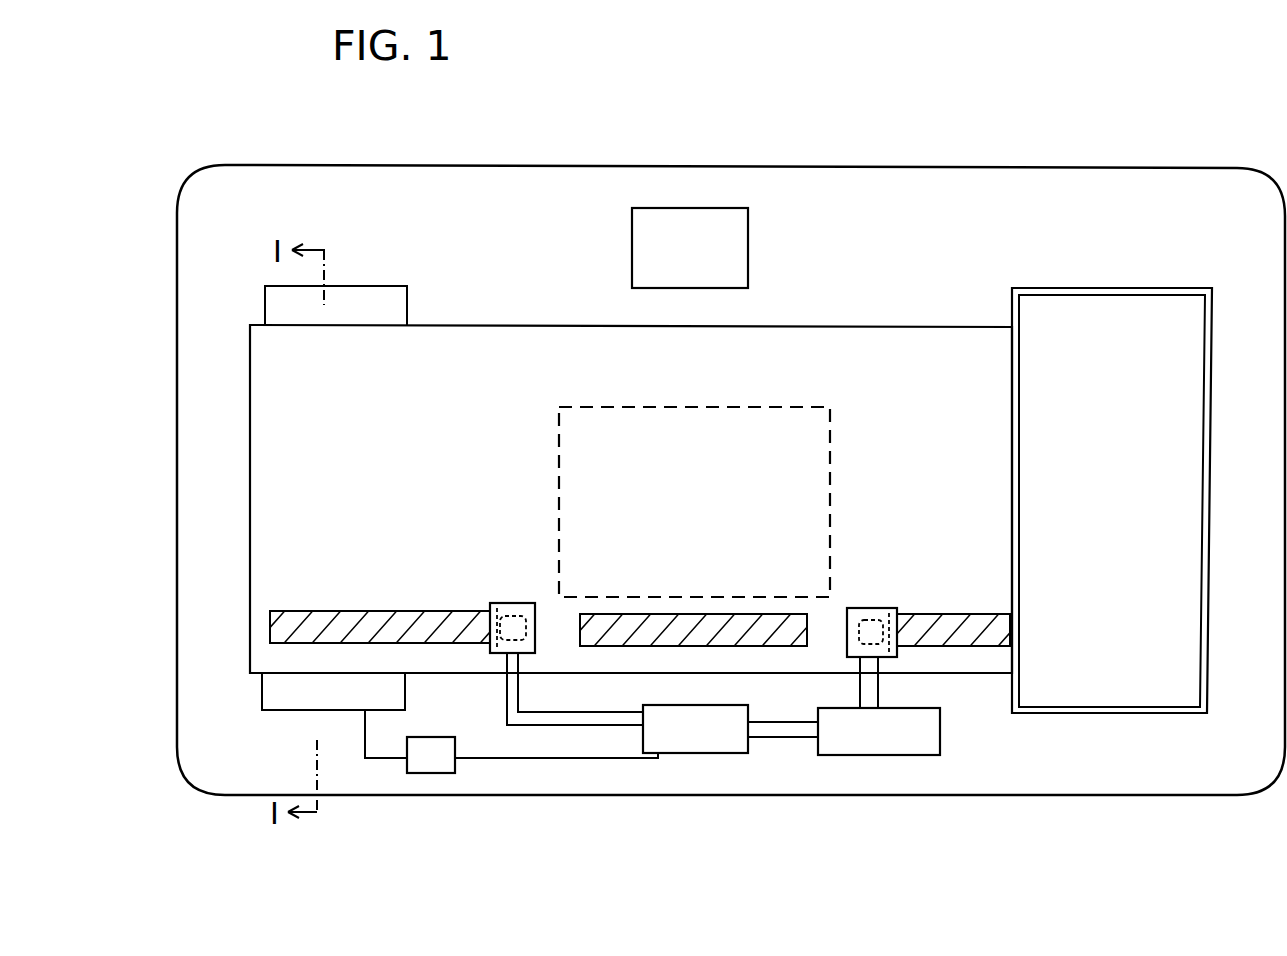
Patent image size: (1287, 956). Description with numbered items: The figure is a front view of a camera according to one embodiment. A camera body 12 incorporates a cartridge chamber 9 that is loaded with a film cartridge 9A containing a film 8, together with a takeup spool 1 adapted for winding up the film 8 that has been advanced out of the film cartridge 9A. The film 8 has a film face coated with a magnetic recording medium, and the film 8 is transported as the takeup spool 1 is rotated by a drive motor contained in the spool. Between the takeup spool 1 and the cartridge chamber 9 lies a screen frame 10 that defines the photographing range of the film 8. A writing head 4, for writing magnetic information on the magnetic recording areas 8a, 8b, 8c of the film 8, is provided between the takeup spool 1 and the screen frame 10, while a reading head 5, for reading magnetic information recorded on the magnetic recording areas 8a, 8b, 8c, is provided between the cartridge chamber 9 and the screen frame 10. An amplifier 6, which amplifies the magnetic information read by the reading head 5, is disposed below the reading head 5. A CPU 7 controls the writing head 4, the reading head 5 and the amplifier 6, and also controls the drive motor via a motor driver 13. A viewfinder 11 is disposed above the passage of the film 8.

The takeup spool 1 is at (315, 705).
The writing head 4 is at (498, 654).
The reading head 5 is at (858, 608).
The amplifier 6 is at (932, 740).
The CPU 7 is at (710, 745).
The film 8 is at (975, 350).
The magnetic recording area 8a is at (347, 610).
The magnetic recording area 8b is at (707, 612).
The magnetic recording area 8c is at (937, 615).
The cartridge chamber 9 is at (1112, 577).
The film cartridge 9A is at (1187, 682).
The screen frame 10 is at (830, 491).
The viewfinder 11 is at (736, 248).
The camera body 12 is at (940, 168).
The motor driver 13 is at (425, 760).